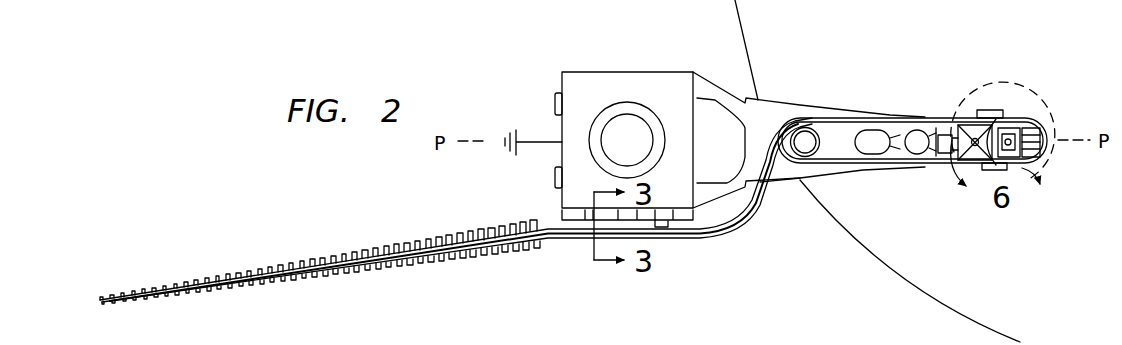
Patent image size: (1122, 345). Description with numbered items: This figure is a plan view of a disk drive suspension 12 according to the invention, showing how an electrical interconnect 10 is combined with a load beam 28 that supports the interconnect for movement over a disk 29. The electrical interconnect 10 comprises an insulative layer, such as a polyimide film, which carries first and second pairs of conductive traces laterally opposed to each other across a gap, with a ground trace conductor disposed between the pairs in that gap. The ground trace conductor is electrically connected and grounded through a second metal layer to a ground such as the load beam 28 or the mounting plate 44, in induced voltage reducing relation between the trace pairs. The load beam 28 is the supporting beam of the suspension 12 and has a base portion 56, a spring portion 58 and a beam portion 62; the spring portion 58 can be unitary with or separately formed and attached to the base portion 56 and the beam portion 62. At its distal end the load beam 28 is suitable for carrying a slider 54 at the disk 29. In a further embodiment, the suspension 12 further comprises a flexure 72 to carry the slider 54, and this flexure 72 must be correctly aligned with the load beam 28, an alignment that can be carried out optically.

The electrical interconnect 10 is at (531, 239).
The disk drive suspension 12 is at (882, 100).
The load beam 28 is at (807, 112).
The disk 29 is at (737, 15).
The mounting plate 44 is at (590, 82).
The slider 54 is at (990, 138).
The base portion 56 is at (657, 217).
The spring portion 58 is at (718, 105).
The beam portion 62 is at (840, 173).
The flexure 72 is at (1030, 189).